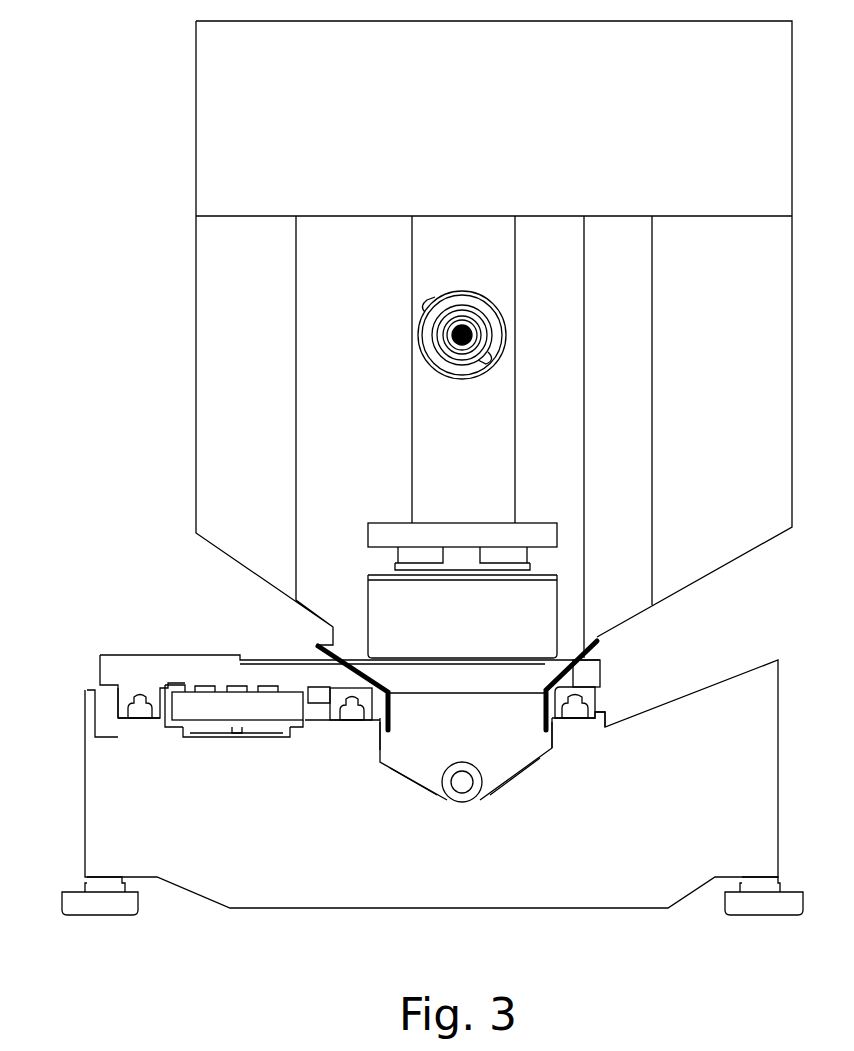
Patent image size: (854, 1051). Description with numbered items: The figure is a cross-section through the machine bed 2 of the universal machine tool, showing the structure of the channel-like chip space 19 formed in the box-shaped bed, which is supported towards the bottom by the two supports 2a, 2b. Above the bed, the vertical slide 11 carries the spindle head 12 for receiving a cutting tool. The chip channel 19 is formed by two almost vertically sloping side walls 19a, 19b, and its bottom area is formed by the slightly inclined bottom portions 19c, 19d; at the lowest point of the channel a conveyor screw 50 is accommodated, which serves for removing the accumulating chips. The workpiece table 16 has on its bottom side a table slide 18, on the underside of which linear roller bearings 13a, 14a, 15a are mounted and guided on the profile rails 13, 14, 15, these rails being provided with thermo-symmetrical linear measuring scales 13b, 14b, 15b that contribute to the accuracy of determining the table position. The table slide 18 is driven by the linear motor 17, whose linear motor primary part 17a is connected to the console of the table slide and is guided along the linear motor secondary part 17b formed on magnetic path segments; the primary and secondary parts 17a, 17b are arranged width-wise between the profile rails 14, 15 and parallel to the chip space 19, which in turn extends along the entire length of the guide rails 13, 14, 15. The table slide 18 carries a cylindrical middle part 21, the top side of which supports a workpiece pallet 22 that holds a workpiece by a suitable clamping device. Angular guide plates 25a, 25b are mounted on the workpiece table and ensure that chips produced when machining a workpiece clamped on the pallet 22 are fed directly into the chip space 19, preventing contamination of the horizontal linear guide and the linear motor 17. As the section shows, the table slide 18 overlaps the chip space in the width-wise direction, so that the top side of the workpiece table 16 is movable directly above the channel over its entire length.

The machine bed 2 is at (453, 902).
The support 2a is at (108, 917).
The support 2b is at (763, 917).
The vertical slide 11 is at (451, 455).
The spindle head 12 is at (462, 292).
The profile rail 13 is at (580, 722).
The linear roller bearing 13a is at (600, 697).
The linear measuring scale 13b is at (598, 725).
The profile rail 14 is at (345, 722).
The linear roller bearing 14a is at (318, 705).
The linear measuring scale 14b is at (330, 722).
The profile rail 15 is at (130, 722).
The linear roller bearing 15a is at (120, 700).
The linear measuring scale 15b is at (150, 722).
The workpiece table 16 is at (606, 668).
The linear motor 17 is at (201, 752).
The linear motor primary part 17a is at (191, 685).
The linear motor secondary part 17b is at (240, 733).
The table slide 18 is at (449, 693).
The chip space 19 is at (449, 757).
The side wall 19a is at (554, 750).
The side wall 19b is at (380, 755).
The bottom portion 19c is at (520, 775).
The bottom portion 19d is at (410, 780).
The cylindrical middle part 21 is at (476, 630).
The workpiece pallet 22 is at (553, 523).
The angular guide plate 25a is at (602, 640).
The angular guide plate 25b is at (319, 647).
The conveyor screw 50 is at (470, 798).